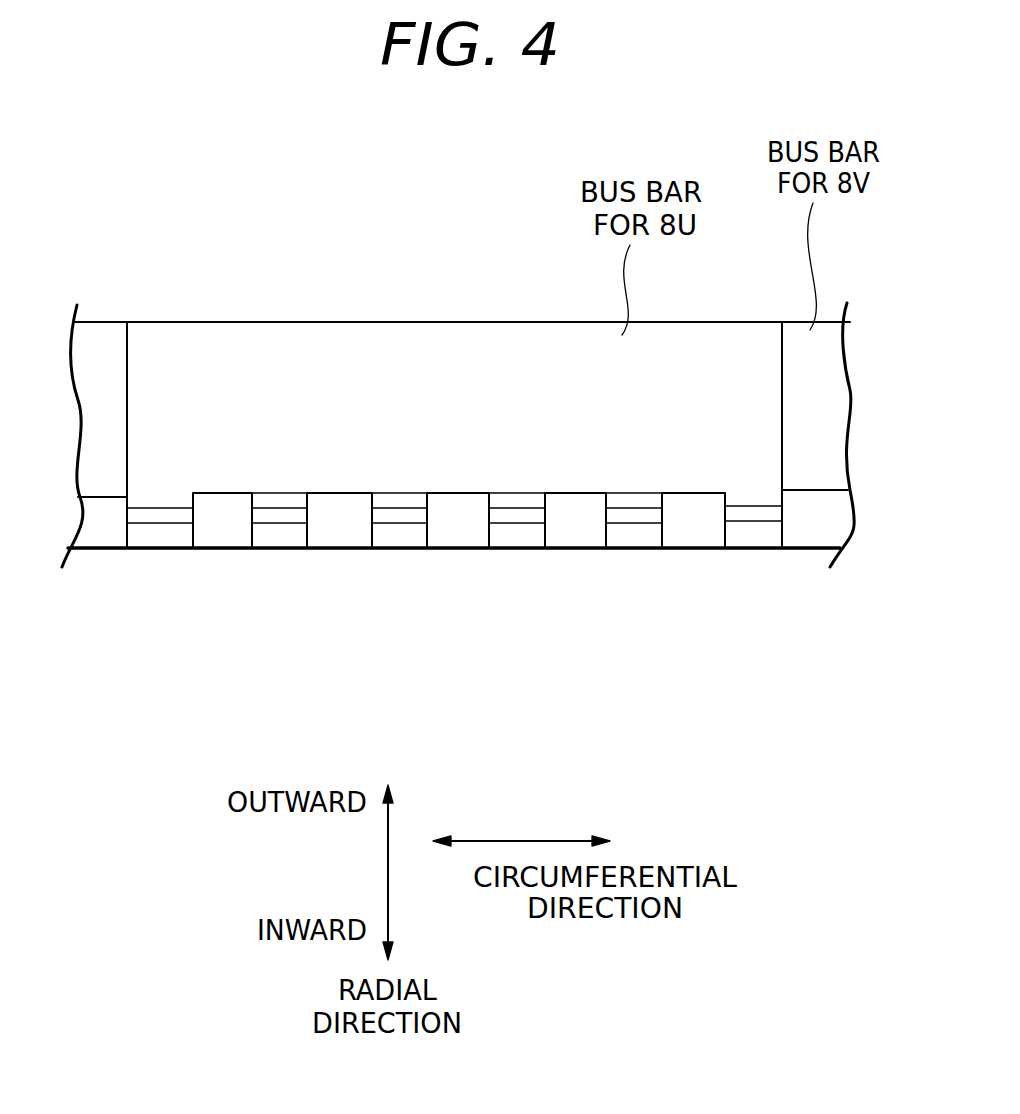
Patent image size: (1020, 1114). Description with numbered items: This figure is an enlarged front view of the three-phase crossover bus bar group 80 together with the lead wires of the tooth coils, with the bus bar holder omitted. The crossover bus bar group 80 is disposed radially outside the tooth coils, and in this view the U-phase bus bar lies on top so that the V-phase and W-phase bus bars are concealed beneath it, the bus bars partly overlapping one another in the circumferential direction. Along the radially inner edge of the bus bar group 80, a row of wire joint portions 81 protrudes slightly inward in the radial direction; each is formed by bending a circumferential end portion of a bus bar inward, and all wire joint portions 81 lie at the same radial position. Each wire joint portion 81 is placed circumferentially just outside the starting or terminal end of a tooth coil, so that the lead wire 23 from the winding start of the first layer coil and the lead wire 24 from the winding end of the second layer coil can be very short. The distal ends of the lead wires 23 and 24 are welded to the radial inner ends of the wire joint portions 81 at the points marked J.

The three-phase crossover bus bar group 80 is at (458, 306).
The wire joint portion 81 is at (275, 498).
The lead wire 23 is at (285, 532).
The lead wire 24 is at (152, 532).
The welded joint J is at (178, 515).